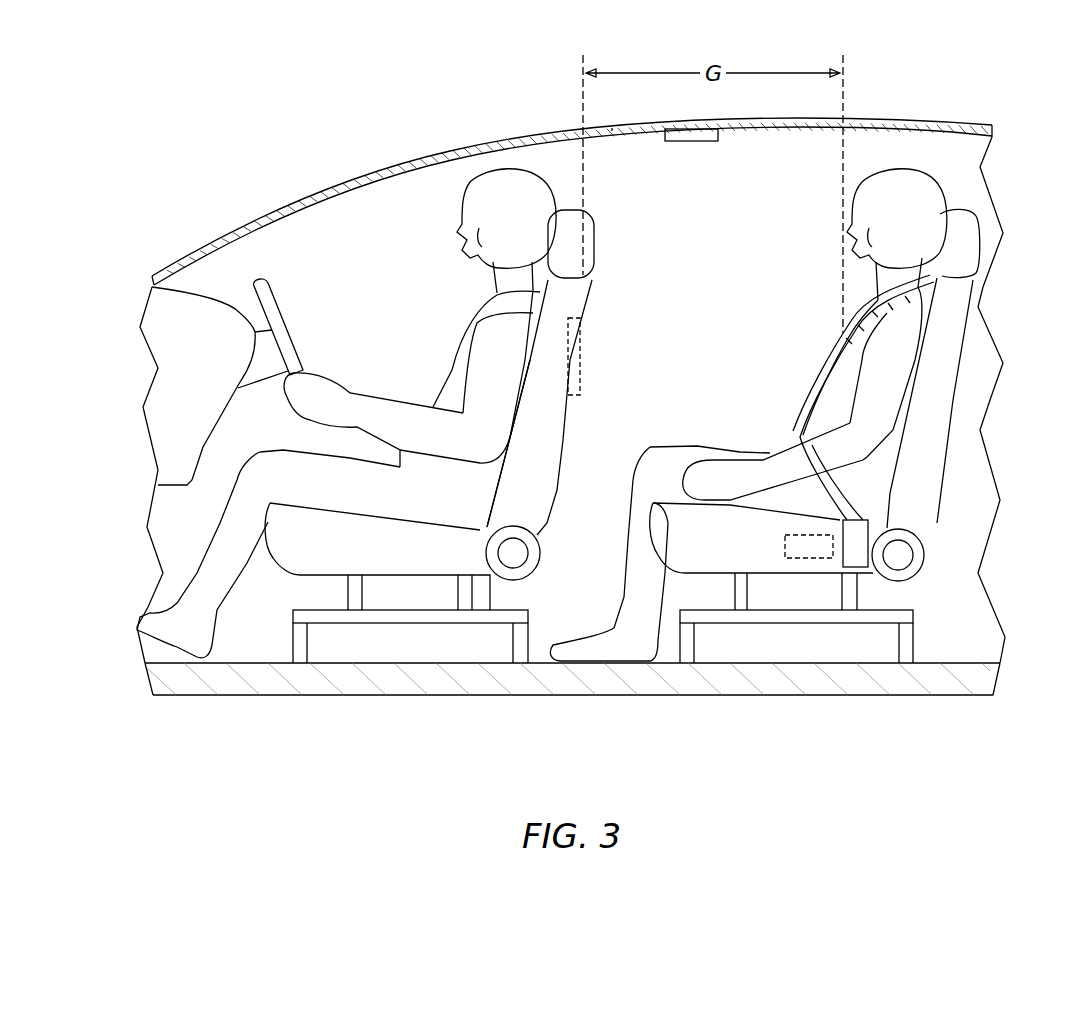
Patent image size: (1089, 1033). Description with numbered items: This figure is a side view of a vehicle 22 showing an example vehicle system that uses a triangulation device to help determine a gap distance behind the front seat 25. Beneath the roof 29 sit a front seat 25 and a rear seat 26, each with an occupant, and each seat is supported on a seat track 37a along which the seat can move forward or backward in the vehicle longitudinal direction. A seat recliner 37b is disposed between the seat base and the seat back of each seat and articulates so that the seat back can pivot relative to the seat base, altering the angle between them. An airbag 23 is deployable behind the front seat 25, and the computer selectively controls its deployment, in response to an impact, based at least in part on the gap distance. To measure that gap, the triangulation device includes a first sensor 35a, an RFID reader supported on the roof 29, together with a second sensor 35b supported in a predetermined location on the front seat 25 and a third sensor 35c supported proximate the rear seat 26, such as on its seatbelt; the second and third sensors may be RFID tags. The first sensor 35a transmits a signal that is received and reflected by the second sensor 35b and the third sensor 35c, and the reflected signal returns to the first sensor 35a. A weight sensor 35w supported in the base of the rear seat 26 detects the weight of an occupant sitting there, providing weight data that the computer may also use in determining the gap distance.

The vehicle 22 is at (325, 195).
The roof 29 is at (615, 128).
The first sensor 35a is at (692, 143).
The front seat 25 is at (465, 410).
The second sensor 35b is at (582, 338).
The airbag 23 is at (584, 387).
The seat recliner 37b is at (540, 555).
The seat track 37a is at (390, 613).
The rear seat 26 is at (851, 475).
The third sensor 35c is at (843, 338).
The weight sensor 35w is at (805, 558).